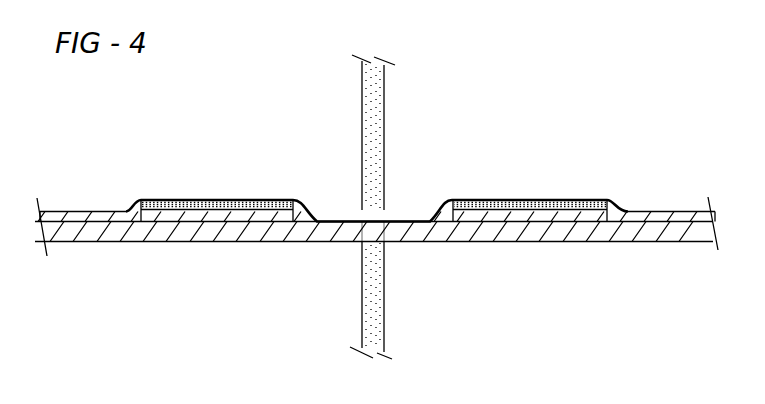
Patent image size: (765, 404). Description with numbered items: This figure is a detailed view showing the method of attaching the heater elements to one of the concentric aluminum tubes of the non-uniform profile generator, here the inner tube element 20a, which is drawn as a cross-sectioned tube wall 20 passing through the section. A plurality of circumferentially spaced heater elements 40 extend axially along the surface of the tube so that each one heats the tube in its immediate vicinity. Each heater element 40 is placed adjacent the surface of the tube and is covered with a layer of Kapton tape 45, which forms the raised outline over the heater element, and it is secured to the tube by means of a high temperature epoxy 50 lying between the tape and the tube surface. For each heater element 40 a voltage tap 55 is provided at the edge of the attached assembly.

The substrate 20 is at (650, 235).
The inner tube element 20a is at (397, 233).
The heater element 40 is at (89, 216).
The layer of Kapton tape 45 is at (537, 198).
The high temperature epoxy 50 is at (588, 198).
The voltage tap 55 is at (612, 203).